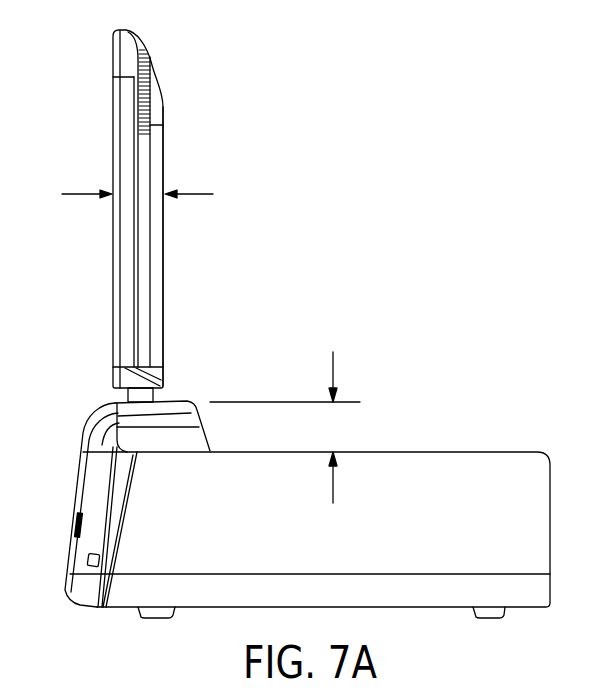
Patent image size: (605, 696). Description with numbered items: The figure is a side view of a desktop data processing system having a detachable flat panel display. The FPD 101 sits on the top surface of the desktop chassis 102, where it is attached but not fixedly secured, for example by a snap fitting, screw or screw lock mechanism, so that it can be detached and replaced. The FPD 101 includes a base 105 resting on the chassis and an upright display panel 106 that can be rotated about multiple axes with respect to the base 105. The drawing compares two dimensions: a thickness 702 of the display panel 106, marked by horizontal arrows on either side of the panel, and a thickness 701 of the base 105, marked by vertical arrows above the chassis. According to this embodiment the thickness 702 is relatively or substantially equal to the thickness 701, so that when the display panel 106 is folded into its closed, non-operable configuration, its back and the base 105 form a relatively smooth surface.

The FPD 101 is at (170, 58).
The desktop chassis 102 is at (443, 557).
The base 105 is at (133, 422).
The display panel 106 is at (165, 142).
The thickness of base 701 is at (285, 411).
The thickness of display panel 702 is at (162, 196).